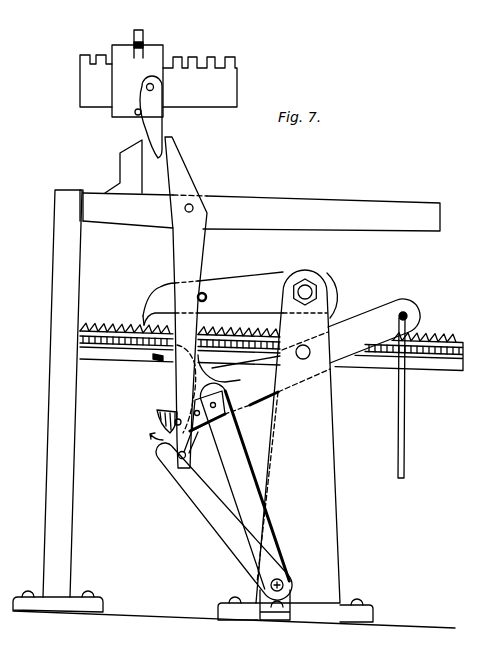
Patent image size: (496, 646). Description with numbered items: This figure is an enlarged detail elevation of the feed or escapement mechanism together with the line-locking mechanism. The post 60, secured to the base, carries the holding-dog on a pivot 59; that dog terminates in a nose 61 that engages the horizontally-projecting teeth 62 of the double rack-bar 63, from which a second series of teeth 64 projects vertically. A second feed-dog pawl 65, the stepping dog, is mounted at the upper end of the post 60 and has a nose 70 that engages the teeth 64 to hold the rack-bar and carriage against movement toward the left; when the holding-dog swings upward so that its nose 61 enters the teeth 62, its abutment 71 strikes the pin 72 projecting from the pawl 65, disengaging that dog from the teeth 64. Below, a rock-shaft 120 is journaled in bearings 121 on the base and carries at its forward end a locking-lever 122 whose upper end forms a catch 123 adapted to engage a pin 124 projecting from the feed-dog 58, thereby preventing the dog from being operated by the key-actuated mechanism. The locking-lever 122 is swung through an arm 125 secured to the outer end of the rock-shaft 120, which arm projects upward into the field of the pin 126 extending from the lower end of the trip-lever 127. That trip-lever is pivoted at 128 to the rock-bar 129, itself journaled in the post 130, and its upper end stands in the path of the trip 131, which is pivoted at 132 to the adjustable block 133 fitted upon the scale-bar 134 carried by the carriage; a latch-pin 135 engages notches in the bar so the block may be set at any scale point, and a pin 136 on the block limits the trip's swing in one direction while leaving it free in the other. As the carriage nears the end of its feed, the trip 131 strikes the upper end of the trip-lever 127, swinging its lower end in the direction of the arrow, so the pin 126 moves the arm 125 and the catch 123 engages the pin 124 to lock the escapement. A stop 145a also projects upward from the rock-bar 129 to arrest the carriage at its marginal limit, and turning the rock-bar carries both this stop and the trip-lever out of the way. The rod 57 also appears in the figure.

The rod 57 is at (405, 393).
The feed-dog 58 is at (351, 331).
The pivot 59 is at (303, 360).
The post 60 is at (295, 446).
The nose 61 is at (157, 415).
The horizontally-projecting teeth 62 is at (120, 348).
The double rack-bar 63 is at (158, 357).
The vertically-projecting teeth 64 is at (102, 320).
The feed-dog pawl 65 is at (256, 295).
The nose 70 is at (143, 315).
The abutment 71 is at (228, 389).
The pin 72 is at (204, 292).
The rock-shaft 120 is at (283, 585).
The bearings 121 is at (267, 487).
The locking-lever 122 is at (253, 487).
The catch 123 is at (260, 400).
The pin 124 is at (213, 408).
The arm 125 is at (223, 528).
The pin 126 is at (180, 458).
The trip-lever 127 is at (182, 244).
The pivot 128 is at (193, 204).
The rock-bar 129 is at (128, 183).
The post 130 is at (65, 452).
The trip 131 is at (160, 128).
The pivot 132 is at (155, 88).
The adjustable block 133 is at (125, 95).
The scale-bar 134 is at (80, 85).
The latch-pin 135 is at (138, 29).
The pin 136 is at (138, 114).
The stop 145a is at (132, 165).